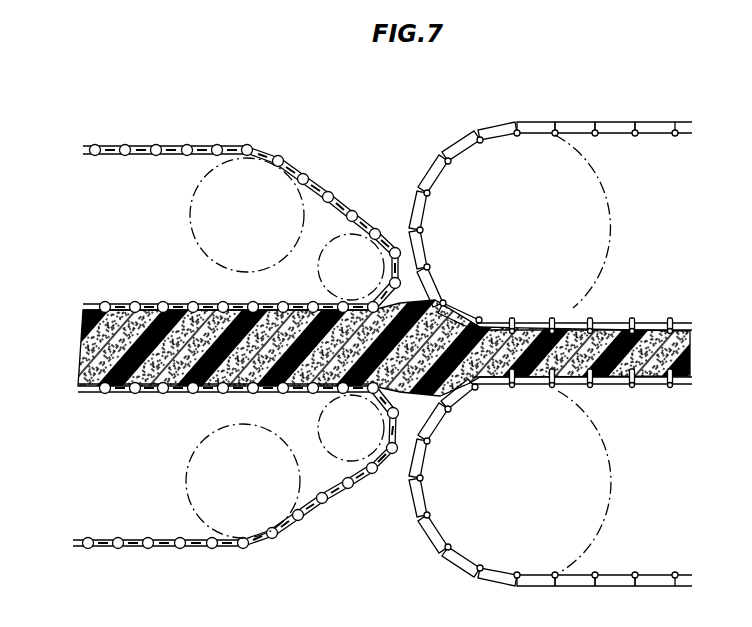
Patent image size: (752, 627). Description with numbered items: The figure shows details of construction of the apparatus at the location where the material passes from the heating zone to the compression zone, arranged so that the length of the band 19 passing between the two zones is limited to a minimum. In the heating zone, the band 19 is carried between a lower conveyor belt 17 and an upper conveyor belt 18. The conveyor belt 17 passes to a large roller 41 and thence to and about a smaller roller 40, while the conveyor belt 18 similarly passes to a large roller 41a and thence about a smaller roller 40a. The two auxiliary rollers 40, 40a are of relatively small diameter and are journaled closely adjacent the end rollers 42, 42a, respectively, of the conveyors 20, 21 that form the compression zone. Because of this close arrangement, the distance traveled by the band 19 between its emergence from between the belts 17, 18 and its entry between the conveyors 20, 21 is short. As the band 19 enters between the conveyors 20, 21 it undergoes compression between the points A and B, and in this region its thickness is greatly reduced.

The conveyor belt 17 is at (178, 547).
The conveyor belt 18 is at (205, 148).
The band 19 is at (338, 404).
The conveyor 20 is at (641, 586).
The conveyor 21 is at (616, 120).
The auxiliary roller 40 is at (358, 452).
The auxiliary roller 40a is at (328, 272).
The large roller 41 is at (195, 468).
The large roller 41a is at (190, 212).
The end roller 42 is at (599, 520).
The end roller 42a is at (600, 194).
The point A is at (443, 301).
The point B is at (514, 321).